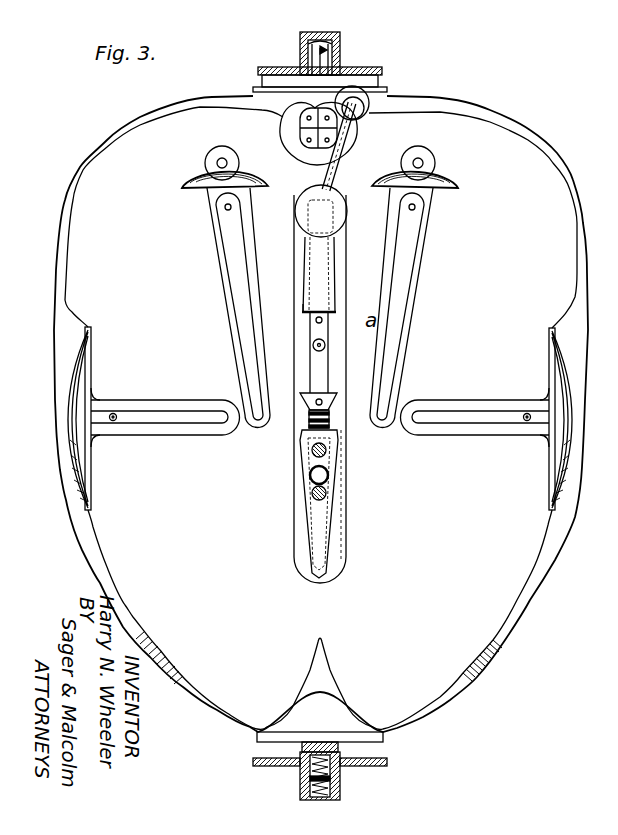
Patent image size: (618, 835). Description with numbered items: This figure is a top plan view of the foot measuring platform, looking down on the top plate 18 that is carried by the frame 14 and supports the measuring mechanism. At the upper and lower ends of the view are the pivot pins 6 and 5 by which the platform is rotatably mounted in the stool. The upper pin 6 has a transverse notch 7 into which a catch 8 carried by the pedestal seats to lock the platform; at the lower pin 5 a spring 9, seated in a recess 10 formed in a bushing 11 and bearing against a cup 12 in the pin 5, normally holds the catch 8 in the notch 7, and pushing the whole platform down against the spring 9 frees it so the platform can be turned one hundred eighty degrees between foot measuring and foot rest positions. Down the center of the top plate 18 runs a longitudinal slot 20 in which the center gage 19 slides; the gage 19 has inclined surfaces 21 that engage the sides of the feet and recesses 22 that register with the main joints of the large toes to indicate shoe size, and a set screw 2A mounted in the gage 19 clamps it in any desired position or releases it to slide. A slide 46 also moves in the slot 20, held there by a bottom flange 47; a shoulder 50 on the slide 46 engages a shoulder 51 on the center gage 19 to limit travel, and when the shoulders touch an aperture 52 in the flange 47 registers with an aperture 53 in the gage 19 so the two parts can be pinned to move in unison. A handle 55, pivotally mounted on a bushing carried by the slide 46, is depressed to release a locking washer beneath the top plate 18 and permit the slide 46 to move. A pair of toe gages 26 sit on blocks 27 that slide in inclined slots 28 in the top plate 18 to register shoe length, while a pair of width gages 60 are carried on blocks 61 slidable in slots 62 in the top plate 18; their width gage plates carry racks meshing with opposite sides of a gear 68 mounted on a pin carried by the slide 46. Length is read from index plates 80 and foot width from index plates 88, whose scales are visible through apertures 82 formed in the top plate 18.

The pivot pin 5 is at (321, 750).
The pivot pin 6 is at (380, 82).
The transverse notch 7 is at (341, 44).
The catch 8 is at (340, 60).
The spring 9 is at (328, 780).
The recess 10 is at (338, 785).
The bushing 11 is at (308, 778).
The cup 12 is at (300, 768).
The frame 14 is at (541, 577).
The top plate 18 is at (321, 418).
The center gage 19 is at (323, 517).
The longitudinal slot 20 is at (321, 372).
The inclined surfaces 21 is at (334, 483).
The recesses 22 is at (303, 431).
The set screw 2A is at (309, 473).
The toe gages 26 is at (240, 177).
The blocks 27 is at (223, 198).
The inclined slots 28 is at (243, 298).
The slide 46 is at (328, 256).
The bottom flange 47 is at (311, 331).
The shoulder 50 is at (302, 313).
The shoulder 51 is at (313, 394).
The aperture 52 is at (323, 320).
The aperture 53 is at (327, 402).
The handle 55 is at (366, 112).
The width gages 60 is at (80, 362).
The blocks 61 is at (100, 417).
The slots 62 is at (173, 415).
The gear 68 is at (325, 345).
The index plates 80 is at (306, 141).
The apertures 82 is at (298, 121).
The index plates 88 is at (311, 150).